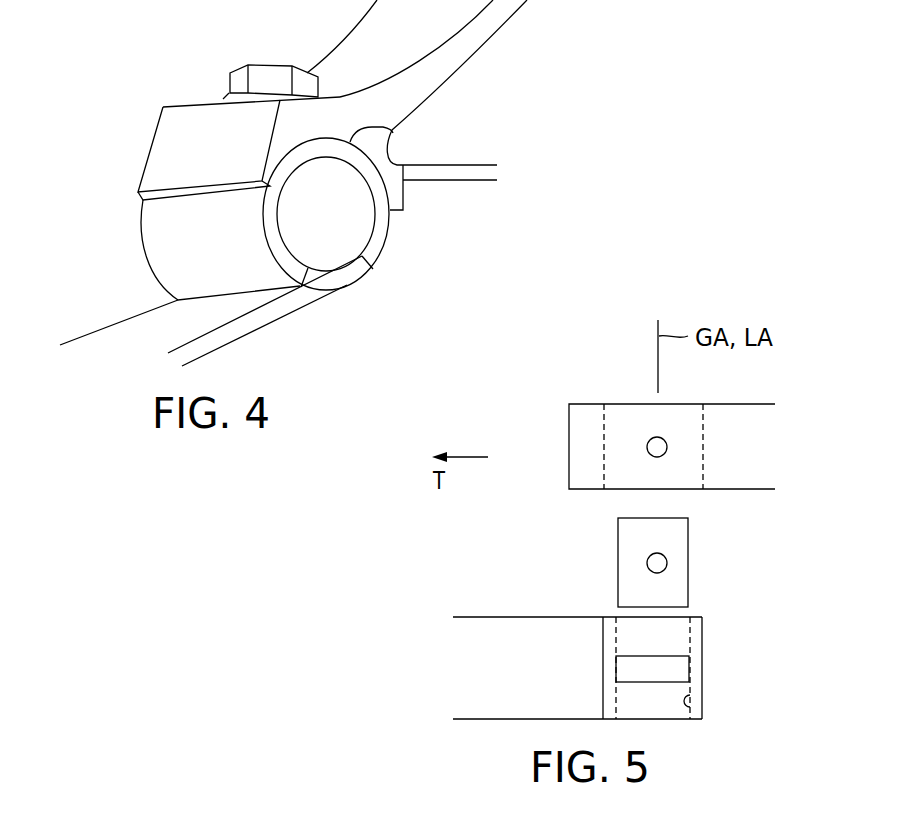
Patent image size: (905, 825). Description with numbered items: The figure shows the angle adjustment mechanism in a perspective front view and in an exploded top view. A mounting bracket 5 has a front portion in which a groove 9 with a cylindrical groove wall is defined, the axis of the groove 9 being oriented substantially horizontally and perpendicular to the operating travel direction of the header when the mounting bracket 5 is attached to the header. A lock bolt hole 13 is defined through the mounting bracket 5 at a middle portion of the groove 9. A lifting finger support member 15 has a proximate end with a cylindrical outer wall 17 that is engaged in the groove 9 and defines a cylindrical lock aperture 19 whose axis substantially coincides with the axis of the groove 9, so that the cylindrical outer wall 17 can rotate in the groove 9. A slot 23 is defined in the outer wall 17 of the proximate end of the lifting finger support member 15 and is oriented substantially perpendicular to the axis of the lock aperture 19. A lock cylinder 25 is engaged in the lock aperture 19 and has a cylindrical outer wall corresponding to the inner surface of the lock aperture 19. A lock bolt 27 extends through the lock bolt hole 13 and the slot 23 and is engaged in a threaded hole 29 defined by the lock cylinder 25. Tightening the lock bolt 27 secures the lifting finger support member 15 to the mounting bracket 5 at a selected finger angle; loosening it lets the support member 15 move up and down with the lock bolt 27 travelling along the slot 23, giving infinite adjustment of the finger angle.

In FIG. 4, the mounting bracket 5 is at (163, 107).
In FIG. 5, the mounting bracket 5 is at (568, 445).
In FIG. 4, the groove 9 is at (393, 133).
In FIG. 5, the groove 9 is at (703, 438).
In FIG. 5, the lock bolt hole 13 is at (652, 435).
In FIG. 4, the lifting finger support member 15 is at (121, 321).
In FIG. 5, the lifting finger support member 15 is at (513, 616).
In FIG. 4, the cylindrical outer wall 17 is at (392, 225).
In FIG. 5, the cylindrical outer wall 17 is at (703, 667).
In FIG. 4, the lock aperture 19 is at (372, 268).
In FIG. 5, the lock aperture 19 is at (693, 703).
In FIG. 5, the slot 23 is at (670, 655).
In FIG. 4, the lock cylinder 25 is at (355, 237).
In FIG. 5, the lock cylinder 25 is at (688, 528).
In FIG. 4, the lock bolt 27 is at (262, 64).
In FIG. 5, the threaded hole 29 is at (668, 560).